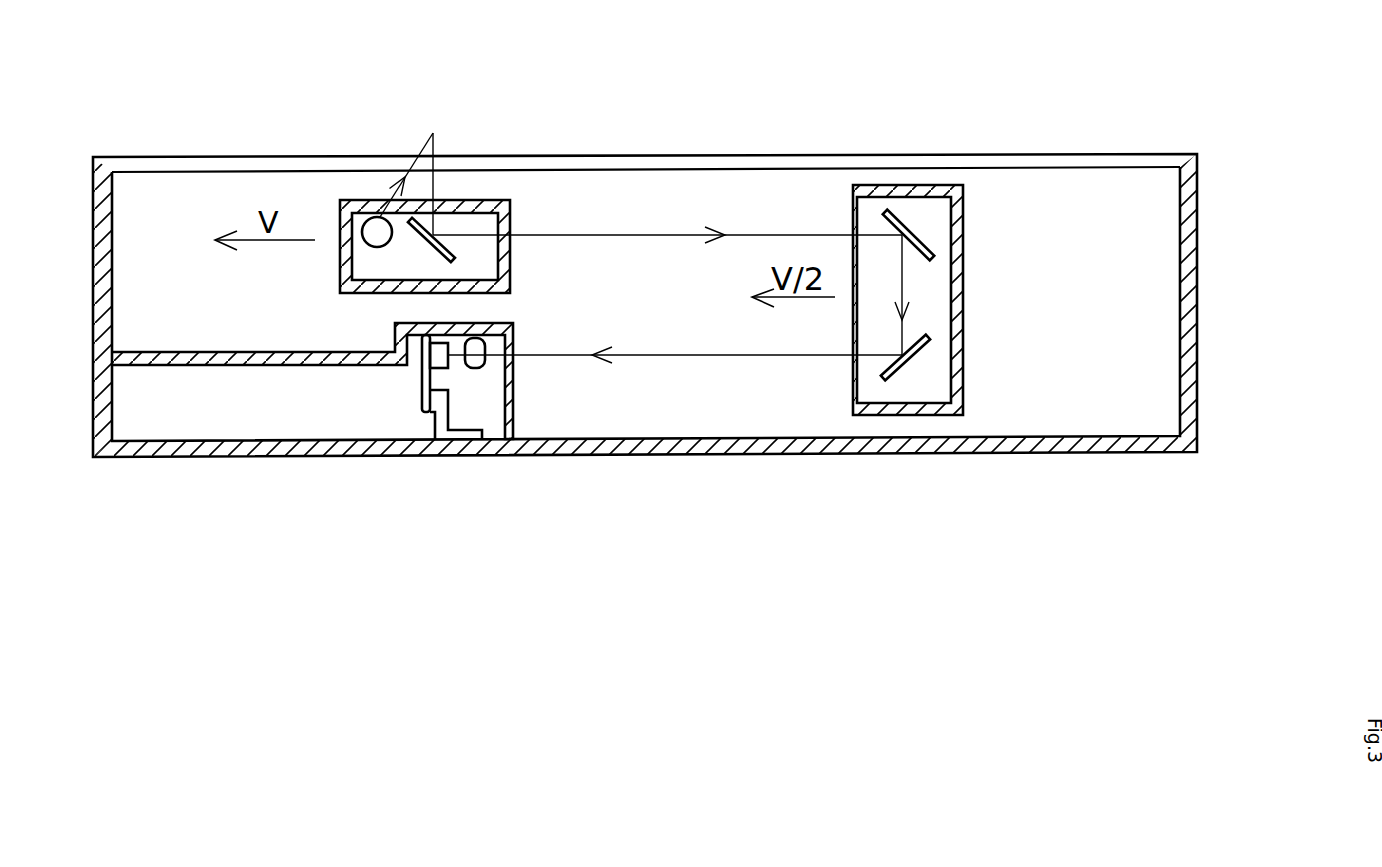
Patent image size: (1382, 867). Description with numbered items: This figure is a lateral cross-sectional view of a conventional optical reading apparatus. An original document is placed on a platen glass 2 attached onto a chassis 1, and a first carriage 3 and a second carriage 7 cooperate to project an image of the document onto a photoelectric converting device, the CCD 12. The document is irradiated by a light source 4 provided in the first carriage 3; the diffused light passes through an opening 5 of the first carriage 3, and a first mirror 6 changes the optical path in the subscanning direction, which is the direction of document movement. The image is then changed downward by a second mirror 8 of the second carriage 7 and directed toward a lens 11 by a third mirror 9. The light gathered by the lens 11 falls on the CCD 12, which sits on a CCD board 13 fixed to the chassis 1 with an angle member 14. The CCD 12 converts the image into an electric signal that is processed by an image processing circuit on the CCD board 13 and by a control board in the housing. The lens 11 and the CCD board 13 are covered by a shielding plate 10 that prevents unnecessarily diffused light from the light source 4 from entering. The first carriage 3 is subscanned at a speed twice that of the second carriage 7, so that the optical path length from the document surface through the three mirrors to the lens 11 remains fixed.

The chassis 1 is at (102, 244).
The platen glass 2 is at (187, 165).
The first carriage 3 is at (342, 210).
The light source 4 is at (376, 228).
The opening 5 is at (458, 205).
The first mirror 6 is at (455, 262).
The second carriage 7 is at (963, 243).
The second mirror 8 is at (900, 215).
The third mirror 9 is at (905, 380).
The shielding plate 10 is at (152, 358).
The lens 11 is at (481, 367).
The photoelectric converting device (CCD) 12 is at (442, 368).
The CCD board 13 is at (422, 368).
The angle member 14 is at (435, 425).